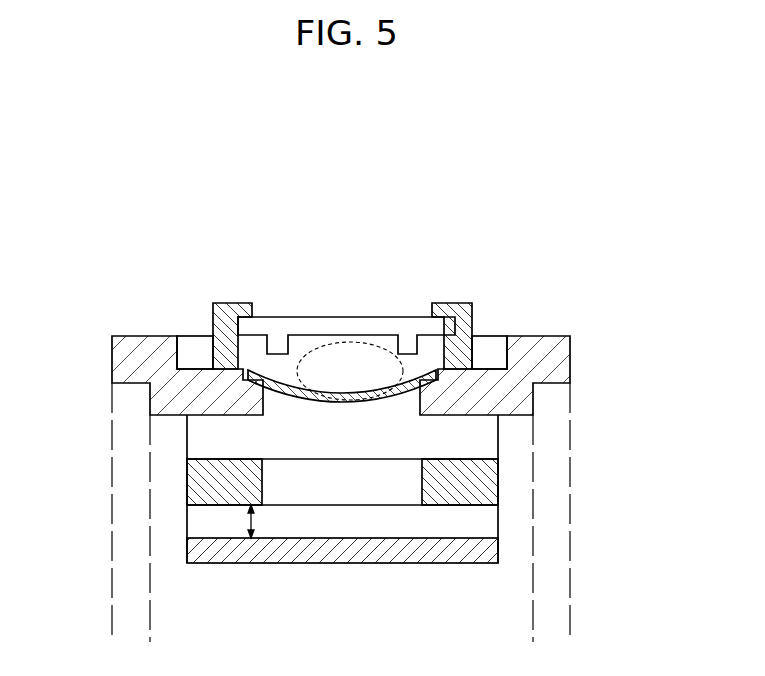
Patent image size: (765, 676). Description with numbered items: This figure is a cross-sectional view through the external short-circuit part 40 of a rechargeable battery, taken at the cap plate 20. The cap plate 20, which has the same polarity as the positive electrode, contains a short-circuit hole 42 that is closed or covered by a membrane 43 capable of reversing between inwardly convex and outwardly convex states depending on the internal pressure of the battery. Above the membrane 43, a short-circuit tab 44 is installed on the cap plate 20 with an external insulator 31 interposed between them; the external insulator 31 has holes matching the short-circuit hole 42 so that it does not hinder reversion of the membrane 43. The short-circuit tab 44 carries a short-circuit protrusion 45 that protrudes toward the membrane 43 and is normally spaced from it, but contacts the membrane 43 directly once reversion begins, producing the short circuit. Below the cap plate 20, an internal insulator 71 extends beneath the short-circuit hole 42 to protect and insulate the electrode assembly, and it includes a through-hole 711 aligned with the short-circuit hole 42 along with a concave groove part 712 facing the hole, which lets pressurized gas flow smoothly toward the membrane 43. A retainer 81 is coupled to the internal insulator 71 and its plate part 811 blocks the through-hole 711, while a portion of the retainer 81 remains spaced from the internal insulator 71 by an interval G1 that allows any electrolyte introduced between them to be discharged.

The cap plate 20 is at (143, 345).
The external insulator 31 is at (222, 310).
The external short-circuit part 40 is at (376, 290).
The short-circuit hole 42 is at (380, 390).
The membrane 43 is at (296, 388).
The short-circuit tab 44 is at (363, 330).
The short-circuit protrusion 45 is at (475, 345).
The internal insulator 71 is at (344, 489).
The through-hole 711 is at (422, 482).
The concave groove part 712 is at (458, 457).
The retainer 81 is at (268, 592).
The plate part 811 is at (415, 552).
The interval G1 is at (251, 520).